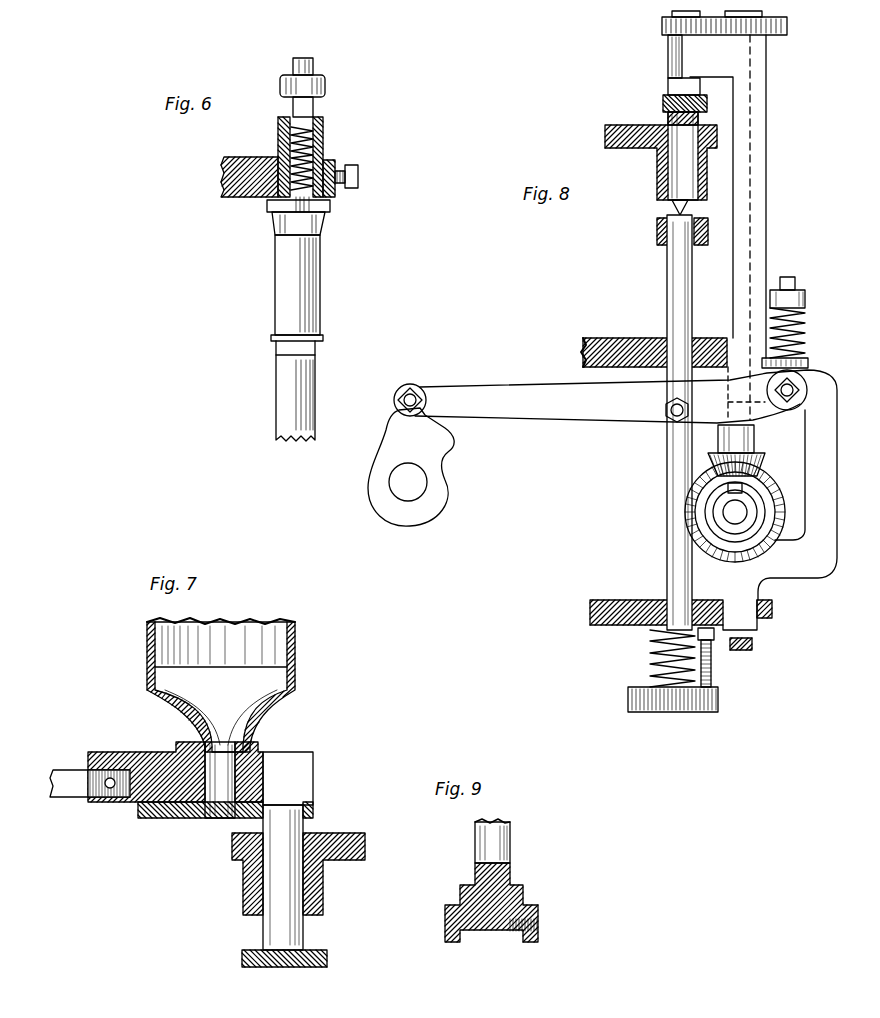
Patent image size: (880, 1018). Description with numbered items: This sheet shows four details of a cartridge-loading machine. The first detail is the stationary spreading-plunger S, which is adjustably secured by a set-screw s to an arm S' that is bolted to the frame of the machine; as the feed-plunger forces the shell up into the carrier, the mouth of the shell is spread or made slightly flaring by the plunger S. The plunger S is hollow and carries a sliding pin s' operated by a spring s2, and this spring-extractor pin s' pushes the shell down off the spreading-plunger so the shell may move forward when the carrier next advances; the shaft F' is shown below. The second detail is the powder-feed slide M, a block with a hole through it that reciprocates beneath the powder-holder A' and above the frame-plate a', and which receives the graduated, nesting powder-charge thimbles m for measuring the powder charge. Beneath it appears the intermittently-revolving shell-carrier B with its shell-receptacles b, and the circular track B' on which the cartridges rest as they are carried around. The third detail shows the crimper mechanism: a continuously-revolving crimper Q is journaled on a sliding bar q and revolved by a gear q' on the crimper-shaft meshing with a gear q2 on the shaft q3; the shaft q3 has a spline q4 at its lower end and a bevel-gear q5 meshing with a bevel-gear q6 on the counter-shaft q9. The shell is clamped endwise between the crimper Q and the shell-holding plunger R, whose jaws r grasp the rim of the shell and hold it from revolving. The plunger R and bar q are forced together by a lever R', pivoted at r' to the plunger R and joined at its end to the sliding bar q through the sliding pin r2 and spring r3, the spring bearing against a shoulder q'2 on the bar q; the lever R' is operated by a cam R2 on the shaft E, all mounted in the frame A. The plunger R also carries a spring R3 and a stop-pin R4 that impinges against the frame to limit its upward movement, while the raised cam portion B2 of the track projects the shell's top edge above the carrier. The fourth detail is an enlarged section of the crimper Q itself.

In FIG. 6, the sliding pin s' is at (317, 135).
In FIG. 6, the spring s2 is at (318, 135).
In FIG. 6, the set-screw s is at (358, 176).
In FIG. 6, the arm S' is at (240, 193).
In FIG. 6, the stationary plunger S is at (276, 276).
In FIG. 6, the shaft F' is at (275, 391).
In FIG. 7, the powder-holder A' is at (221, 685).
In FIG. 7, the powder-feed slide M is at (150, 752).
In FIG. 7, the powder-charge thimbles m is at (220, 780).
In FIG. 7, the frame-plate a' is at (225, 825).
In FIG. 7, the shell-carrier B is at (299, 859).
In FIG. 7, the shell-receptacles b is at (323, 890).
In FIG. 7, the circular track B' is at (284, 973).
In FIG. 8, the circular track B' is at (661, 236).
In FIG. 8, the gear q' is at (707, 23).
In FIG. 8, the gear q2 is at (787, 24).
In FIG. 8, the crimper Q is at (663, 100).
In FIG. 9, the crimper Q is at (530, 918).
In FIG. 8, the sliding bar q is at (743, 227).
In FIG. 8, the frame A is at (674, 368).
In FIG. 8, the shell-holding jaws r is at (661, 206).
In FIG. 8, the raised or cam portion B2 is at (657, 222).
In FIG. 8, the shell-holding plunger R is at (662, 422).
In FIG. 8, the sliding pin r2 is at (793, 280).
In FIG. 8, the spring r3 is at (805, 320).
In FIG. 8, the shoulder or projection q'2 is at (799, 352).
In FIG. 8, the lever R' is at (615, 510).
In FIG. 8, the pivot r' is at (660, 410).
In FIG. 8, the cam R2 is at (411, 467).
In FIG. 8, the shaft E is at (415, 482).
In FIG. 8, the bevel-gear q5 is at (708, 460).
In FIG. 8, the spline q4 is at (686, 488).
In FIG. 8, the shaft q3 is at (705, 500).
In FIG. 8, the bevel-gear q6 is at (715, 515).
In FIG. 8, the counter-shaft q9 is at (690, 535).
In FIG. 8, the spring R3 is at (650, 650).
In FIG. 8, the stop-pin R4 is at (711, 665).